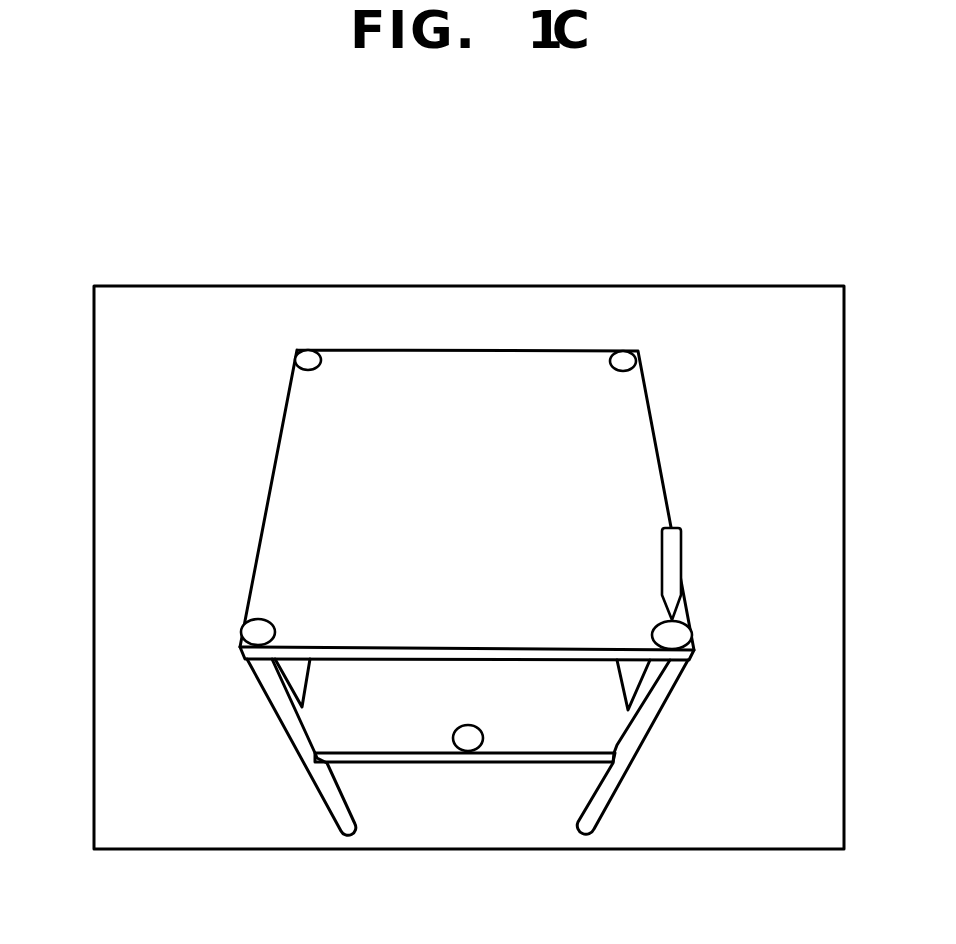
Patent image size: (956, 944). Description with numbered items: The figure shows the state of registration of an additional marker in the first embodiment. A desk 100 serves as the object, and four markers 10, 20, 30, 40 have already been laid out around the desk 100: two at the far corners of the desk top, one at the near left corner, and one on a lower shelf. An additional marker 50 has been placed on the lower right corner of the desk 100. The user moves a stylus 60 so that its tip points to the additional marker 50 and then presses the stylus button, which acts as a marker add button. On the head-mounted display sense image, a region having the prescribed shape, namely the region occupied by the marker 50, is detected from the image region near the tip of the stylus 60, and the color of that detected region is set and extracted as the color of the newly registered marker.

The marker 10 is at (257, 630).
The marker 20 is at (470, 742).
The marker 30 is at (312, 358).
The marker 40 is at (628, 358).
The additional marker 50 is at (672, 635).
The stylus 60 is at (672, 565).
The desk 100 is at (663, 459).